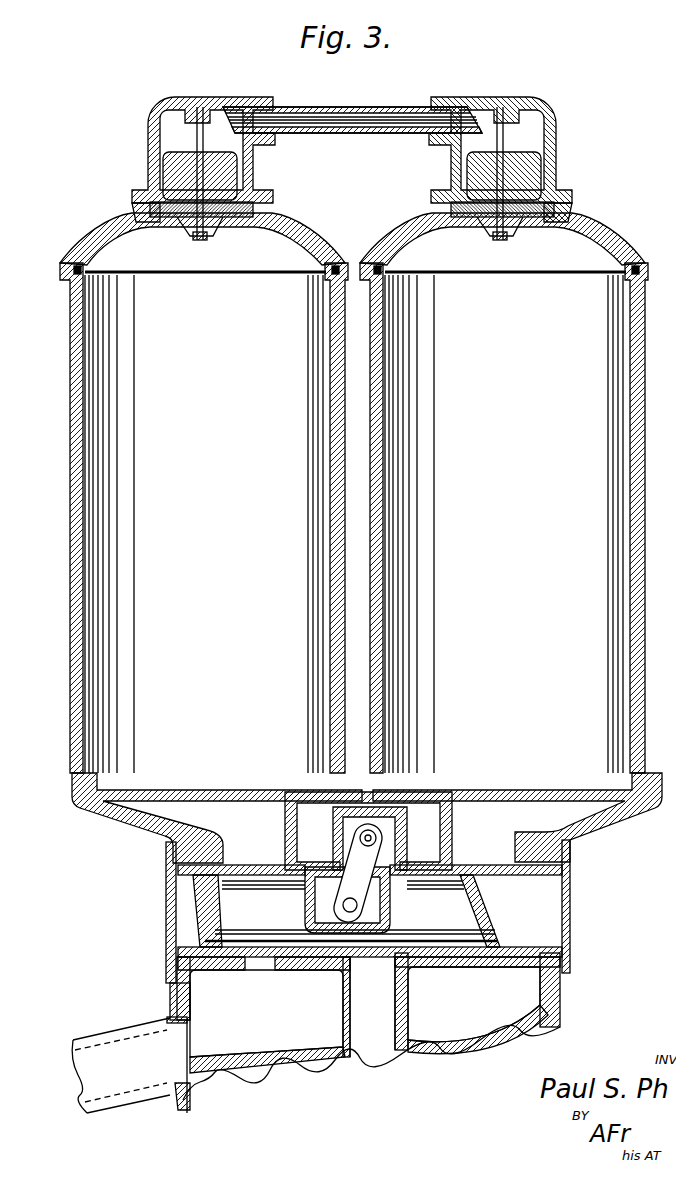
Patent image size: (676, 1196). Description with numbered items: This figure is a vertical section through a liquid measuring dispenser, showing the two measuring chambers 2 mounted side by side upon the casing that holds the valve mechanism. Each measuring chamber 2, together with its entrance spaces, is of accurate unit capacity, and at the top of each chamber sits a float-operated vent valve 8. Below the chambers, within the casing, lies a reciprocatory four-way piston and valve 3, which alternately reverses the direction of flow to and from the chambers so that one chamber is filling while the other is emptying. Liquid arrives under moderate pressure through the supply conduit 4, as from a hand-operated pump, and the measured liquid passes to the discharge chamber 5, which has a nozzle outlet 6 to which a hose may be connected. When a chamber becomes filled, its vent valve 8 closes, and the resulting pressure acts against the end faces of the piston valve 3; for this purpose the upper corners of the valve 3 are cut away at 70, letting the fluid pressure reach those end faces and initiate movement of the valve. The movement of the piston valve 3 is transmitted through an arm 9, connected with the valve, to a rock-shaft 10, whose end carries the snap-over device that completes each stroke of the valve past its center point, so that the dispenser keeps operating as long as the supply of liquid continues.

The measuring chamber 2 is at (354, 493).
The four-way piston and valve 3 is at (346, 911).
The supply conduit 4 is at (379, 1005).
The discharge chamber 5 is at (263, 1015).
The nozzle outlet 6 is at (117, 1033).
The float-operated vent valve 8 is at (190, 231).
The arm 9 is at (347, 887).
The rock-shaft 10 is at (385, 838).
The cut-away upper corners 70 is at (222, 854).